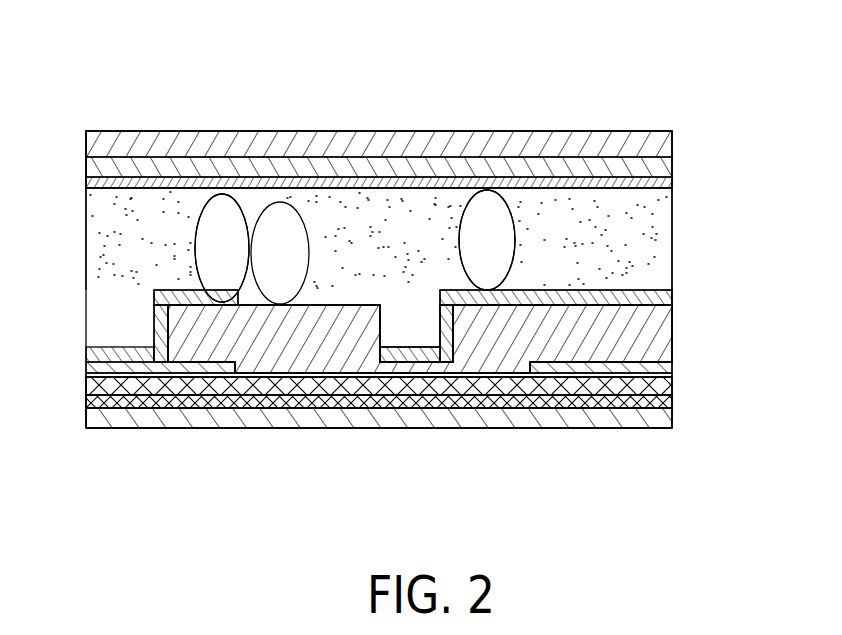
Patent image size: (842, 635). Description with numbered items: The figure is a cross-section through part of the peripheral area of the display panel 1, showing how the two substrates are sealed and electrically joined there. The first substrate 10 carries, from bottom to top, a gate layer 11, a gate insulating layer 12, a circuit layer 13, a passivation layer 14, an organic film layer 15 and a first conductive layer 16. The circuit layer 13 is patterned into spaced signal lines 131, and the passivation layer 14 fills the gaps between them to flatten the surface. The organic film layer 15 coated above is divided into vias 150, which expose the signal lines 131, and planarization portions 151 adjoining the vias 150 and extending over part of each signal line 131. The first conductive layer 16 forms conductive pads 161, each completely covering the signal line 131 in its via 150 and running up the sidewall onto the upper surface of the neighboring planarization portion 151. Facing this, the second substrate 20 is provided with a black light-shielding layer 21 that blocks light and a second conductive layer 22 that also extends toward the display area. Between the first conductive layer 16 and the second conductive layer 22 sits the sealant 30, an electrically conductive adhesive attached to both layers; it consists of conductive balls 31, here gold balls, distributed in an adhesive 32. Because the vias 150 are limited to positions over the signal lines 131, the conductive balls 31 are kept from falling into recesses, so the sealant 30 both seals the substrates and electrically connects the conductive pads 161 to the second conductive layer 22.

The display panel 1 is at (159, 69).
The first substrate 10 is at (625, 428).
The gate layer 11 is at (672, 402).
The gate insulating layer 12 is at (672, 380).
The circuit layer 13 is at (455, 478).
The signal line 131 is at (158, 398).
The passivation layer 14 is at (672, 350).
The organic film layer 15 is at (733, 319).
The planarization portion 151 is at (672, 318).
The via 150 is at (418, 315).
The first conductive layer 16 is at (733, 281).
The conductive pad 161 is at (580, 290).
The second substrate 20 is at (616, 131).
The black light-shielding layer 21 is at (640, 150).
The second conductive layer 22 is at (672, 185).
The sealant 30 is at (727, 200).
The conductive ball 31 is at (512, 208).
The adhesive 32 is at (672, 243).